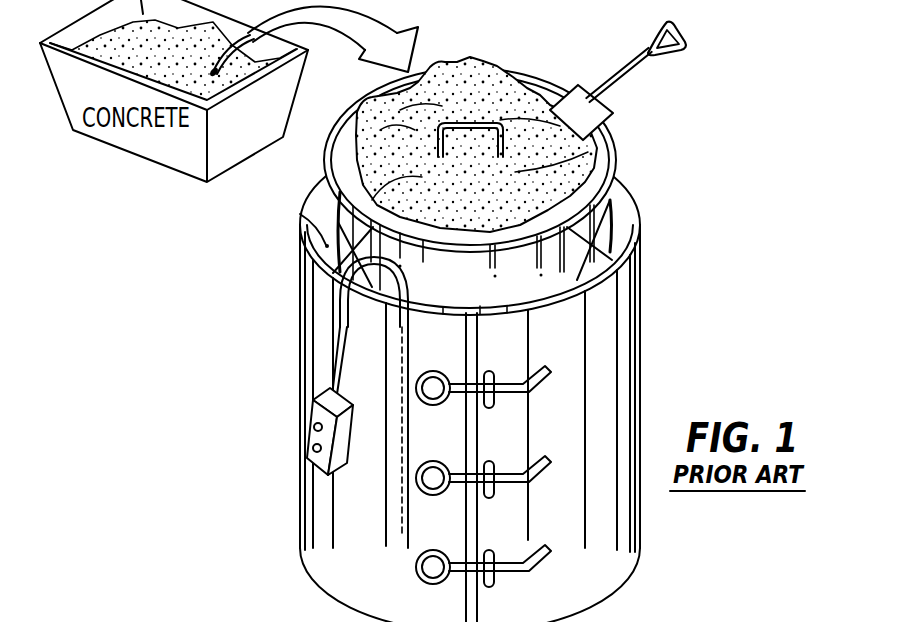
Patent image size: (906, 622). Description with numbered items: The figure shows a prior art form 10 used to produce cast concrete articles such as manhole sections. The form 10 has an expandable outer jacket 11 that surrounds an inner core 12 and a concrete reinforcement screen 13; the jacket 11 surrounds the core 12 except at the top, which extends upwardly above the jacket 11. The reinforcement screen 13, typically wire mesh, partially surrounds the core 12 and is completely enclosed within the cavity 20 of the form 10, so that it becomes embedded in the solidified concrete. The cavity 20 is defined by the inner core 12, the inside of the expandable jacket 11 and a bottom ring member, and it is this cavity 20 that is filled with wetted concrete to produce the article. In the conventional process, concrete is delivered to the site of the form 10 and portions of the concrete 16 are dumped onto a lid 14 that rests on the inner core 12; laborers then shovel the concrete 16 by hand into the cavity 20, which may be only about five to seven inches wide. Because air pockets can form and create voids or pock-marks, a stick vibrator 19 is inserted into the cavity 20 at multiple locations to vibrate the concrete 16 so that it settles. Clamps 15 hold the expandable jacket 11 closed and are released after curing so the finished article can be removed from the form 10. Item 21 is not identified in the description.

The prior art form 10 is at (696, 106).
The expandable outer jacket 11 is at (322, 340).
The inner core 12 is at (548, 249).
The concrete reinforcement screen 13 is at (613, 208).
The lid 14 is at (331, 144).
The clamps 15 is at (543, 383).
The concrete 16 is at (464, 78).
The stick vibrator 19 is at (315, 439).
The cavity 20 is at (300, 214).
The container bottom 21 is at (625, 578).